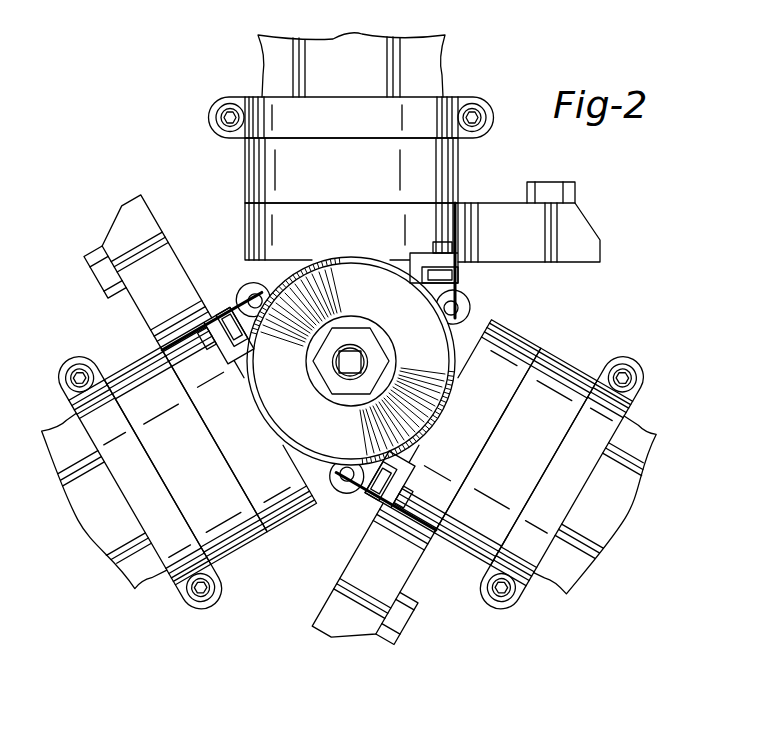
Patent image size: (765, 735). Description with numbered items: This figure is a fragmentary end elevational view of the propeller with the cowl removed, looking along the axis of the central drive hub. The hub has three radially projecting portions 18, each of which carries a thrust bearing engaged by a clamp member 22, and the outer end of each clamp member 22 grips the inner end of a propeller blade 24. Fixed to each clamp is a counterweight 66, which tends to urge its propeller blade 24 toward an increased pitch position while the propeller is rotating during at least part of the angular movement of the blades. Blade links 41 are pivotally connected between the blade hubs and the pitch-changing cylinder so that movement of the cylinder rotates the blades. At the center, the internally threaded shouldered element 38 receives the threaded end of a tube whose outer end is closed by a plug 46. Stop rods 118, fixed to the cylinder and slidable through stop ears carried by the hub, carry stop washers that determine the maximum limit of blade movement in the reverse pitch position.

The propeller blade 24 is at (431, 62).
The clamp member 22 is at (254, 210).
The radially projecting portion 18 is at (280, 267).
The counterweight 66 is at (592, 240).
The blade link 41 is at (462, 276).
The stop rod 118 is at (468, 306).
The shouldered element 38 is at (372, 333).
The plug 46 is at (364, 360).